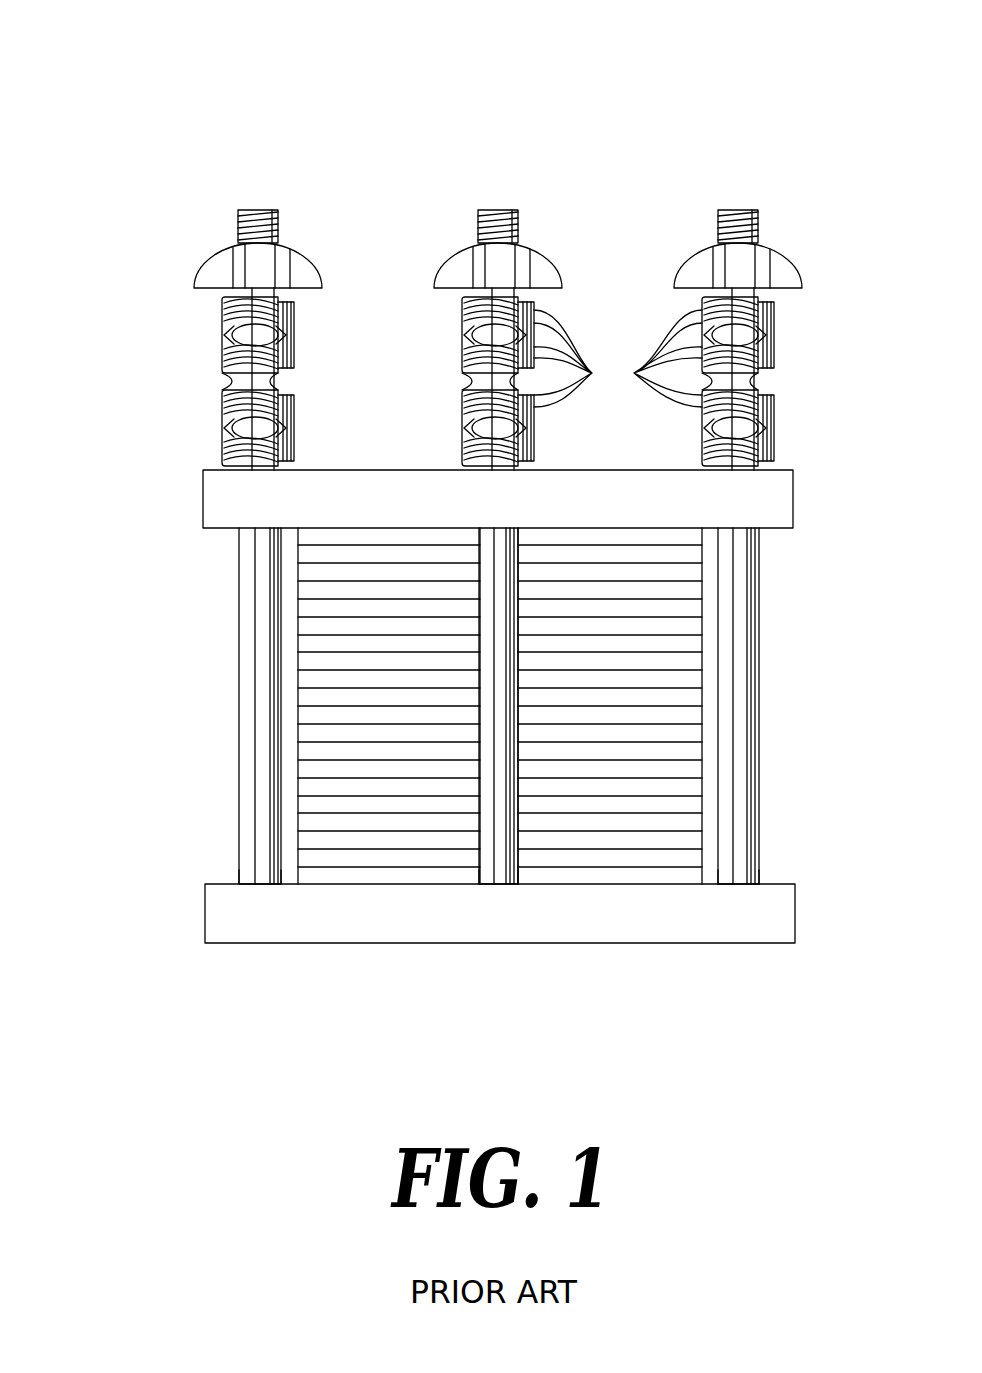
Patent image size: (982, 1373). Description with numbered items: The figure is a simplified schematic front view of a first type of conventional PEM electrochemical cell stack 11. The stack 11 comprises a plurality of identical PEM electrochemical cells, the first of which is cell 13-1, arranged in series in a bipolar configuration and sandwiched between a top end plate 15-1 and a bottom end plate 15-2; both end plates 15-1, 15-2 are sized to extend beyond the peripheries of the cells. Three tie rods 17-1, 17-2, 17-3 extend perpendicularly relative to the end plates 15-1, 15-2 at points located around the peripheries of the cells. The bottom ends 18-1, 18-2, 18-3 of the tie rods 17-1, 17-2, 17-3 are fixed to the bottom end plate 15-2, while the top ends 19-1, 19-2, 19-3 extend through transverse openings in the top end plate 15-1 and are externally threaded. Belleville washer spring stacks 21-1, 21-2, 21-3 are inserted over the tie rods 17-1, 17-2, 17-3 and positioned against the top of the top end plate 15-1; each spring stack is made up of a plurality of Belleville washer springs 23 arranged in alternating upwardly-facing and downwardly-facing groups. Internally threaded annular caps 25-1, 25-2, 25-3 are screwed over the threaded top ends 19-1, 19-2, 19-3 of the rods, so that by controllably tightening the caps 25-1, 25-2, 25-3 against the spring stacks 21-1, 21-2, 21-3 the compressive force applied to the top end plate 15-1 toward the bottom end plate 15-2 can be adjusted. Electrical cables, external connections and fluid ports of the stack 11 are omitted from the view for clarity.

The PEM electrochemical cell stack 11 is at (385, 94).
The PEM electrochemical cell 13-1 is at (693, 537).
The top end plate 15-1 is at (237, 505).
The bottom end plate 15-2 is at (220, 915).
The tie rod 17-1 is at (248, 648).
The tie rod 17-2 is at (482, 822).
The tie rod 17-3 is at (748, 712).
The bottom end of tie rod 18-1 is at (240, 882).
The bottom end of tie rod 18-2 is at (520, 880).
The bottom end of tie rod 18-3 is at (760, 882).
The top end of tie rod 19-1 is at (250, 210).
The top end of tie rod 19-2 is at (490, 210).
The top end of tie rod 19-3 is at (730, 210).
The Belleville washer spring stack 21-1 is at (217, 300).
The Belleville washer spring stack 21-2 is at (457, 300).
The Belleville washer spring stack 21-3 is at (785, 300).
The Belleville washer spring 23 is at (618, 358).
The annular cap 25-1 is at (300, 260).
The annular cap 25-2 is at (540, 260).
The annular cap 25-3 is at (779, 260).